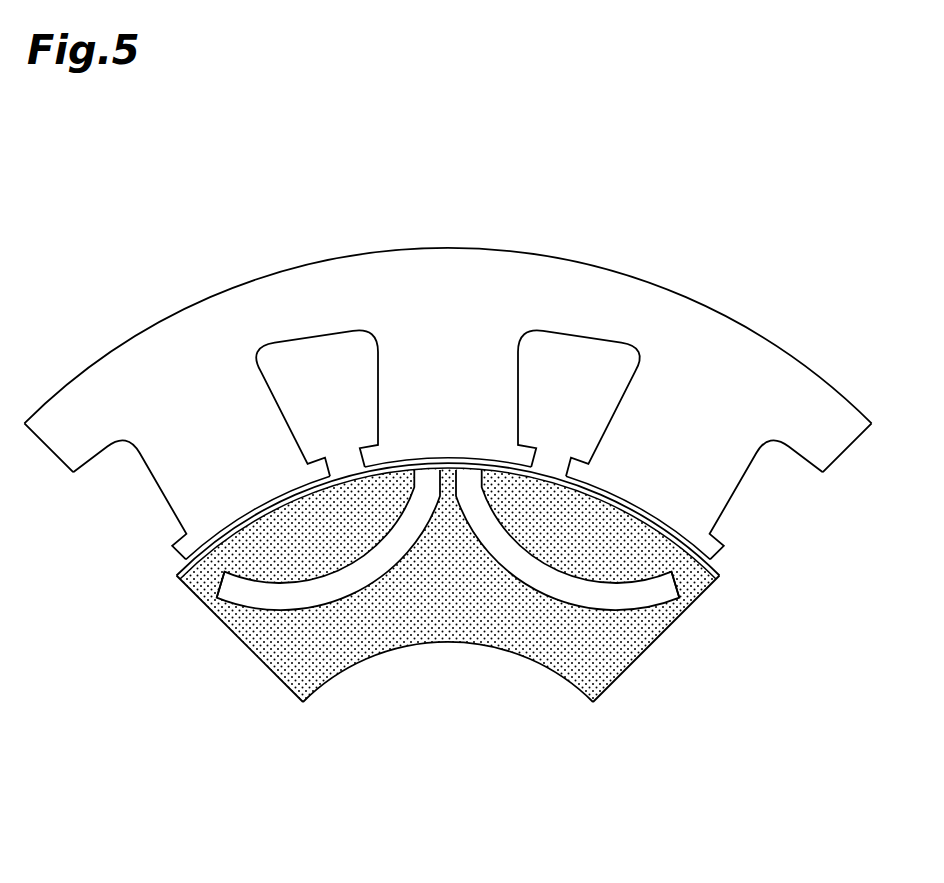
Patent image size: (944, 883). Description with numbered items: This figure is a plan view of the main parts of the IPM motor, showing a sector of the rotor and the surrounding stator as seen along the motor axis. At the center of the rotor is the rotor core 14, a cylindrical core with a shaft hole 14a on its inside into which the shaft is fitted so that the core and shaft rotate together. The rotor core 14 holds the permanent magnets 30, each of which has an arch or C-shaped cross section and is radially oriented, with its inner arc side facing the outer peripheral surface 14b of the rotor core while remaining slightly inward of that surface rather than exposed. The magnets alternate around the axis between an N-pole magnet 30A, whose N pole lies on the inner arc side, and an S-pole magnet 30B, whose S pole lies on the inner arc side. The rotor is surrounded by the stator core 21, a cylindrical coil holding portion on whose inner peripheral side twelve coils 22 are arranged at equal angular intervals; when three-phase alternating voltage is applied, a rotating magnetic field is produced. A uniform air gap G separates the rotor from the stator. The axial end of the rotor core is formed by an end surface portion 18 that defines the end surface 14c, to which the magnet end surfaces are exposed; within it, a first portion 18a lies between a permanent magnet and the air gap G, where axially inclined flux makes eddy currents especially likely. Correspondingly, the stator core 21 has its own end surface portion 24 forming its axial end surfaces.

The rotor core 14 is at (486, 613).
The shaft hole 14a is at (440, 642).
The outer peripheral surface of the rotor core 14b is at (720, 557).
The end surface of the rotor core 14c is at (268, 643).
The end surface portion 18 is at (607, 653).
The first portion 18a is at (250, 567).
The stator core 21 is at (447, 407).
The coil 22 is at (351, 343).
The end surface portion of the stator core 24 is at (227, 310).
The permanent magnet 30 is at (448, 615).
The N-pole magnet 30A is at (350, 603).
The S-pole magnet 30B is at (546, 603).
The air gap G is at (183, 577).